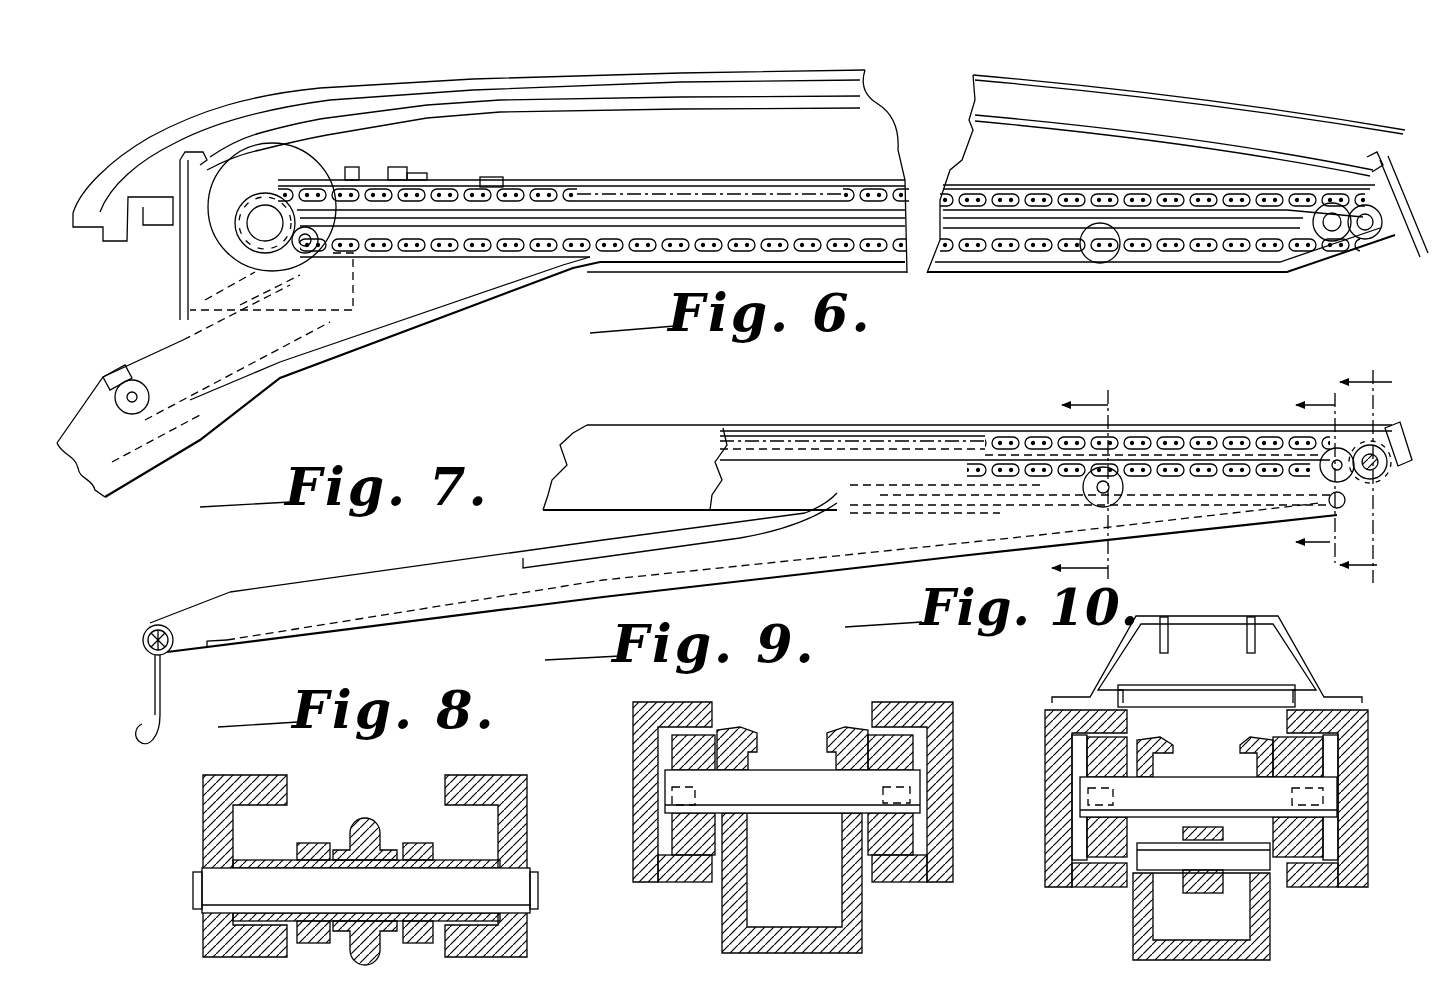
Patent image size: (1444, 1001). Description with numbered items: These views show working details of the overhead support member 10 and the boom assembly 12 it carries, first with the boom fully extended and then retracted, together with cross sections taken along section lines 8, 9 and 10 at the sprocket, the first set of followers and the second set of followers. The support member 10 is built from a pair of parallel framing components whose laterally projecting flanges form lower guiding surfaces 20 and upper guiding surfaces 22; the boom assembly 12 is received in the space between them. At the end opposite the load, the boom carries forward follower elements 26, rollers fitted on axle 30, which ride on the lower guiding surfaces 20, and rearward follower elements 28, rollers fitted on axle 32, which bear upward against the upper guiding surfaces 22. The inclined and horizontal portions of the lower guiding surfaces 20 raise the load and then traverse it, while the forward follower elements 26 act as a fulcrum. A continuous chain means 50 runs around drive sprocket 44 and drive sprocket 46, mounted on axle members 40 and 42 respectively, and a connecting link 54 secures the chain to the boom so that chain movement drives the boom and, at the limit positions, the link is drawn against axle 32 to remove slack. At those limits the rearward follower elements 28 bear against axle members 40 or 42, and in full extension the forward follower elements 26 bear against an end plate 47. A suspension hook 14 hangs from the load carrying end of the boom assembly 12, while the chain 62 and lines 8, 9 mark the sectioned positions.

In FIG. 7, the section line 8- 8 is at (1366, 473).
In FIG. 7, the section line 9- 9 is at (1096, 482).
In FIG. 6, the overhead support member 10 is at (1043, 282).
In FIG. 7, the overhead support member 10 is at (600, 452).
In FIG. 8, the overhead support member 10 is at (197, 835).
In FIG. 9, the overhead support member 10 is at (622, 767).
In FIG. 10, the overhead support member 10 is at (1030, 752).
In FIG. 6, the boom assembly 12 is at (120, 452).
In FIG. 7, the boom assembly 12 is at (423, 598).
In FIG. 9, the boom assembly 12 is at (862, 952).
In FIG. 10, the boom assembly 12 is at (1270, 960).
In FIG. 7, the suspension hook 14 is at (155, 693).
In FIG. 6, the lower guiding surfaces 20 is at (303, 348).
In FIG. 7, the lower guiding surfaces 20 is at (735, 500).
In FIG. 9, the lower guiding surfaces 20 is at (700, 885).
In FIG. 10, the lower guiding surfaces 20 is at (1100, 880).
In FIG. 6, the upper guiding surfaces 22 is at (640, 223).
In FIG. 7, the upper guiding surfaces 22 is at (846, 468).
In FIG. 9, the upper guiding surfaces 22 is at (735, 735).
In FIG. 10, the upper guiding surfaces 22 is at (1155, 740).
In FIG. 6, the forward follower elements 26 is at (150, 388).
In FIG. 7, the forward follower elements 26 is at (1097, 492).
In FIG. 9, the forward follower elements 26 is at (683, 823).
In FIG. 10, the forward follower elements 26 is at (1155, 797).
In FIG. 6, the rearward follower elements 28 is at (332, 172).
In FIG. 7, the rearward follower elements 28 is at (1325, 470).
In FIG. 10, the rearward follower elements 28 is at (1330, 760).
In FIG. 9, the axle 30 is at (803, 800).
In FIG. 10, the axle 32 is at (1195, 792).
In FIG. 6, the axle member 40 is at (266, 236).
In FIG. 6, the axle member 42 is at (1390, 222).
In FIG. 8, the axle member 42 is at (365, 890).
In FIG. 6, the drive sprocket 44 is at (262, 218).
In FIG. 6, the drive sprocket 46 is at (1372, 248).
In FIG. 7, the drive sprocket 46 is at (1380, 481).
In FIG. 8, the drive sprocket 46 is at (370, 822).
In FIG. 6, the end plate 47 is at (105, 390).
In FIG. 6, the continuous chain means 50 is at (476, 178).
In FIG. 6, the connecting link 54 is at (298, 255).
In FIG. 7, the connecting link 54 is at (1335, 507).
In FIG. 10, the connecting link 54 is at (1195, 895).
In FIG. 6, the chain 62 is at (507, 183).
In FIG. 7, the chain 62 is at (1233, 437).